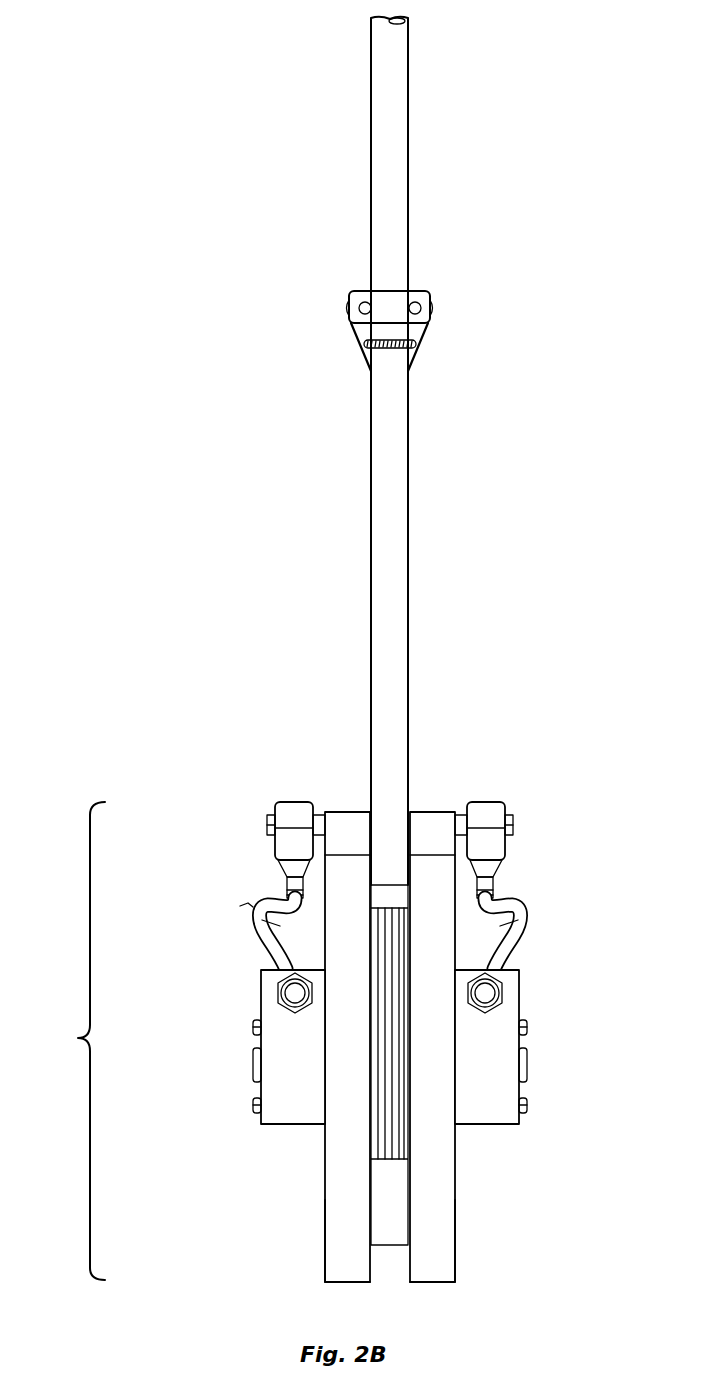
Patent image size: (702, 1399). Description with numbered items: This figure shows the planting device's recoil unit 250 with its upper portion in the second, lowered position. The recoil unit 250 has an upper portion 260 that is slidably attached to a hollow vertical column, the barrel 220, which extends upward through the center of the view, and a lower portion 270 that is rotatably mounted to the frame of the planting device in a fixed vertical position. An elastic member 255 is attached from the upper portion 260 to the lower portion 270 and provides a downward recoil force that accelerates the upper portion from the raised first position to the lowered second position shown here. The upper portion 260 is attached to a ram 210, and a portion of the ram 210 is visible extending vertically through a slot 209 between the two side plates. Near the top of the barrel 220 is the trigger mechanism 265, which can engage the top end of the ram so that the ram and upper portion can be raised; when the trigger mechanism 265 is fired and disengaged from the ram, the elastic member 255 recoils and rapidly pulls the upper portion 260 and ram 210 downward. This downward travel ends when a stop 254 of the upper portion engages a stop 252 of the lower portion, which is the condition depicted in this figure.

The barrel 220 is at (410, 165).
The trigger mechanism 265 is at (318, 304).
The stop of the upper portion 254 is at (347, 815).
The slot 209 is at (403, 995).
The ram 210 is at (390, 1130).
The upper portion 260 is at (223, 842).
The elastic member 255 is at (248, 906).
The lower portion 270 is at (208, 1040).
The stop of the lower portion 252 is at (326, 1240).
The recoil unit 250 is at (65, 1041).